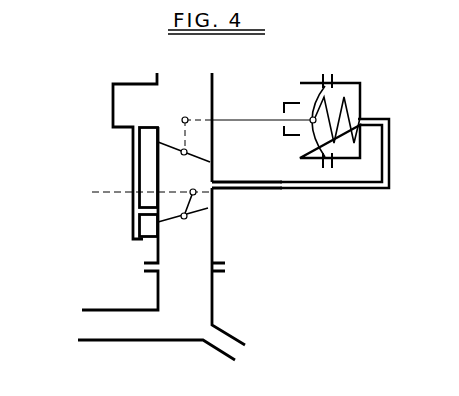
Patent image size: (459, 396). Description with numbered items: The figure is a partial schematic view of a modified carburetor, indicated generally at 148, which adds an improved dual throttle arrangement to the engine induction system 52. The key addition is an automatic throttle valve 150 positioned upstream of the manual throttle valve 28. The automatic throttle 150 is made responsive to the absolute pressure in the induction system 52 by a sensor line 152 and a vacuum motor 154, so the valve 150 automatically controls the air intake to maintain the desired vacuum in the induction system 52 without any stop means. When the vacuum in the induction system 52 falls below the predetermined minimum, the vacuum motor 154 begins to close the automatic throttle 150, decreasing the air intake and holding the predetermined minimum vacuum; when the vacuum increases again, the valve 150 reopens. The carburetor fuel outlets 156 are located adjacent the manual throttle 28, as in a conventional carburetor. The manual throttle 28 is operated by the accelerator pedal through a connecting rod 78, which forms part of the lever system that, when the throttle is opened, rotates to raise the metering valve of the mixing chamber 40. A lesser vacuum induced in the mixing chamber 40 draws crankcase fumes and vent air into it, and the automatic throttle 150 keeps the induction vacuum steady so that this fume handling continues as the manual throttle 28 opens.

The carburetor modification 148 is at (113, 113).
The automatic throttle valve 150 is at (197, 156).
The sensor line 152 is at (337, 187).
The vacuum motor 154 is at (383, 63).
The carburetor fuel outlets 156 is at (143, 241).
The connecting rod 78 is at (247, 190).
The manual throttle valve 28 is at (197, 212).
The induction system 52 is at (156, 338).
The mixing chamber 40 is at (275, 379).